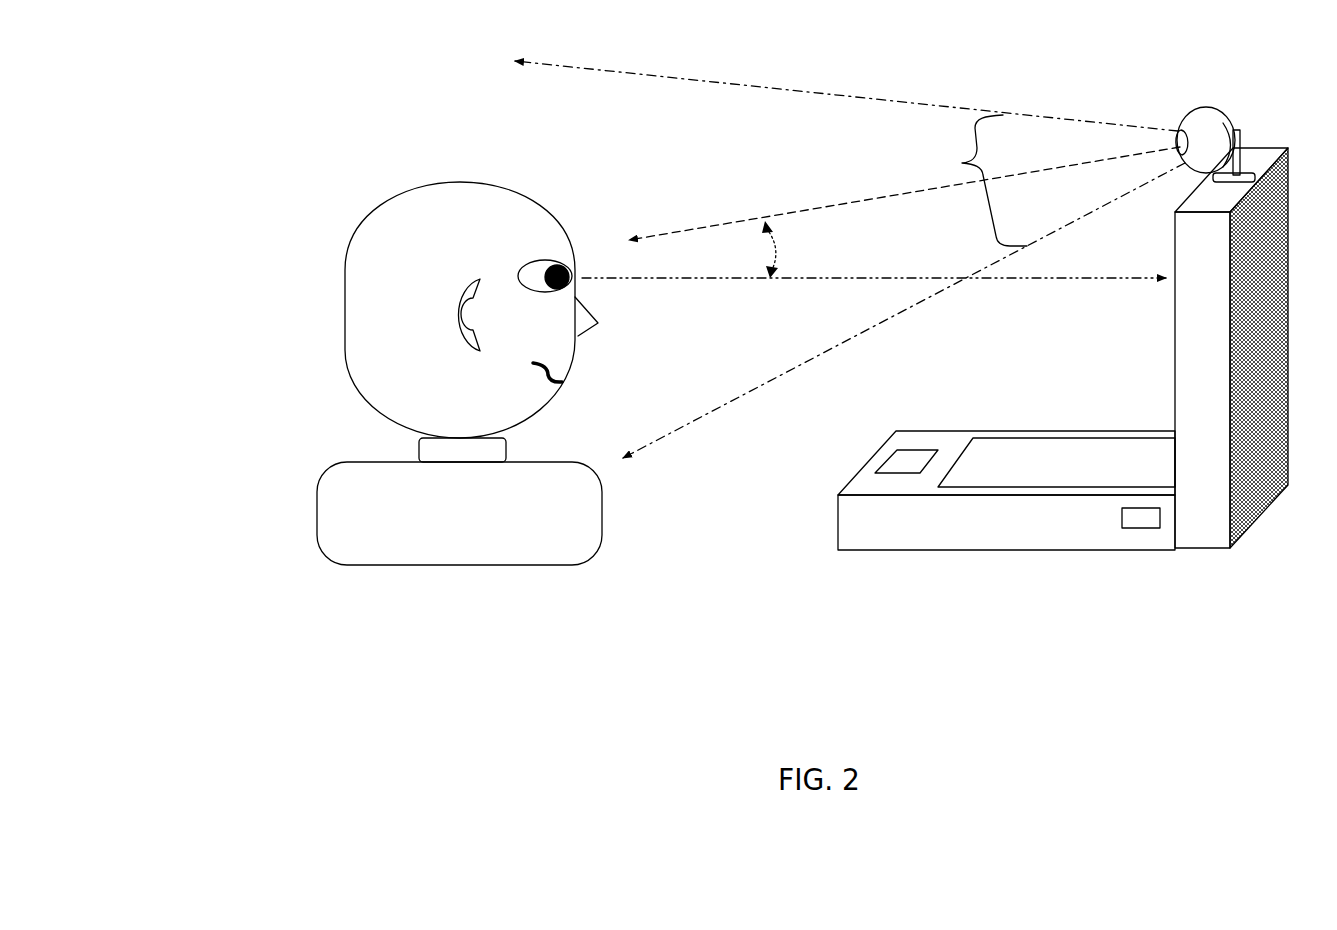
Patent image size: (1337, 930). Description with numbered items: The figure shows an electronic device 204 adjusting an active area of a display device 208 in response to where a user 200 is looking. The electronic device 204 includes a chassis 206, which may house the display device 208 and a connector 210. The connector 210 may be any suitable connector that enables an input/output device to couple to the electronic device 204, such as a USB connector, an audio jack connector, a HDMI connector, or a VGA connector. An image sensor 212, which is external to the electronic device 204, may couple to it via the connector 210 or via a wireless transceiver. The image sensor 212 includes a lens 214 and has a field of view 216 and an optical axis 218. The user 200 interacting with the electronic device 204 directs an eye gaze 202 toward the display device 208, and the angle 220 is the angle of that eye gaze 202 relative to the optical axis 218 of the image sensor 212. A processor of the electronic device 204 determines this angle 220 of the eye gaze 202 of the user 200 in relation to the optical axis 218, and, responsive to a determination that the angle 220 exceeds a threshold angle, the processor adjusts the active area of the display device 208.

The user 200 is at (315, 513).
The eye gaze 202 is at (663, 280).
The electronic device 204 is at (1066, 382).
The chassis 206 is at (940, 539).
The display device 208 is at (1167, 337).
The connector 210 is at (1143, 528).
The image sensor 212 is at (1192, 121).
The lens 214 is at (1178, 140).
The field of view 216 is at (962, 163).
The optical axis 218 is at (663, 237).
The angle 220 is at (780, 247).